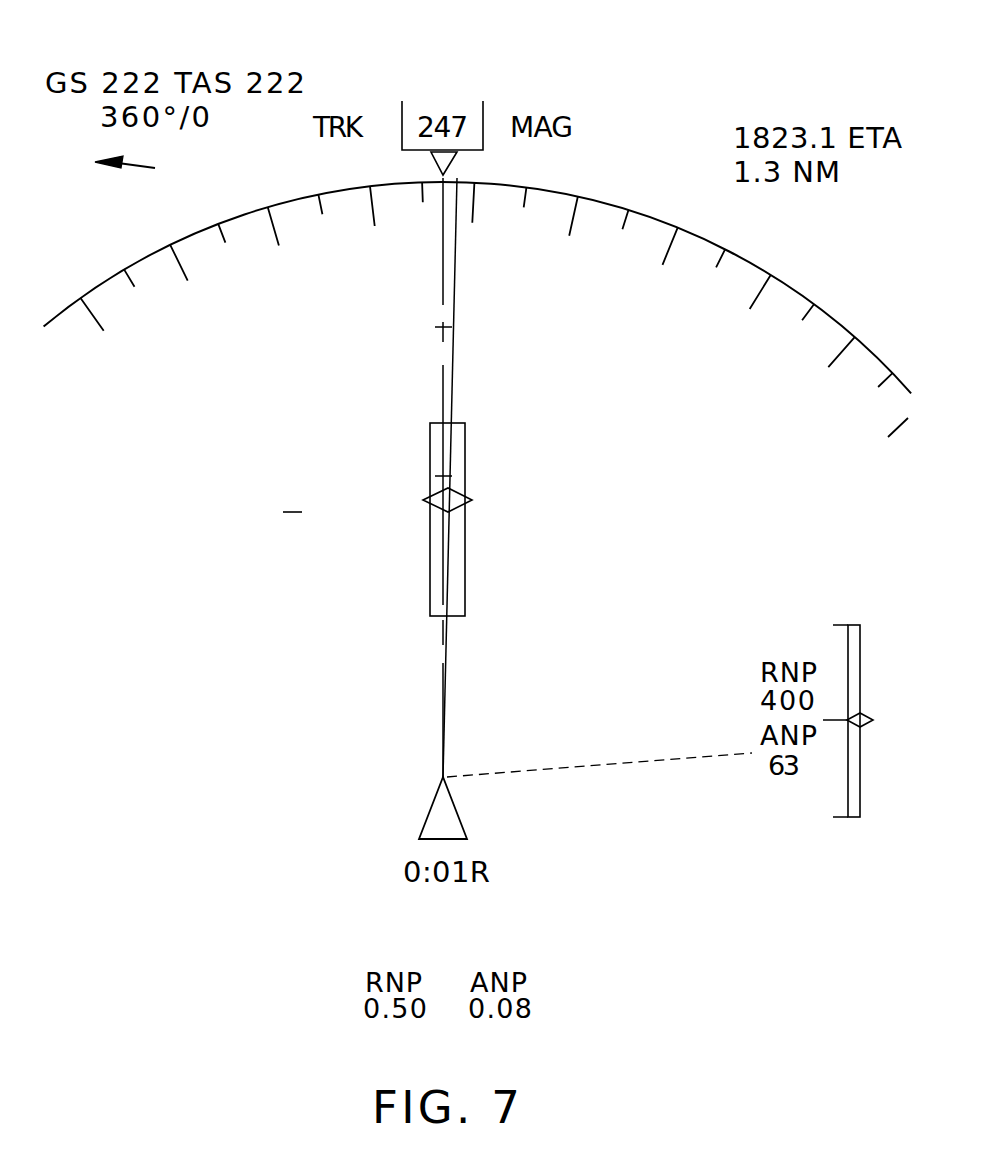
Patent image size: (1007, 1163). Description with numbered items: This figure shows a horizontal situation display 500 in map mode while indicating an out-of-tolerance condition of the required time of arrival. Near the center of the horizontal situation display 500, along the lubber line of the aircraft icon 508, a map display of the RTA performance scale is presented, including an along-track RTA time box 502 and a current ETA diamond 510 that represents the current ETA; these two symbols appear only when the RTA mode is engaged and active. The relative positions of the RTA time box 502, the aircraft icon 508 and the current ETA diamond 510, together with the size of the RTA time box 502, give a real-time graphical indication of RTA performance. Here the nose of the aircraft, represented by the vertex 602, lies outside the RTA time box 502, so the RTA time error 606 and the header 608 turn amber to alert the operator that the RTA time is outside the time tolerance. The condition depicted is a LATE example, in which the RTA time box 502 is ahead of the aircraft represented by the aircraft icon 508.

The horizontal situation display 500 is at (690, 92).
The RTA time box 502 is at (465, 573).
The aircraft icon 508 is at (447, 820).
The current ETA diamond 510 is at (472, 500).
The vertex 602 is at (440, 777).
The RTA time error 606 is at (292, 515).
The header 608 is at (305, 482).